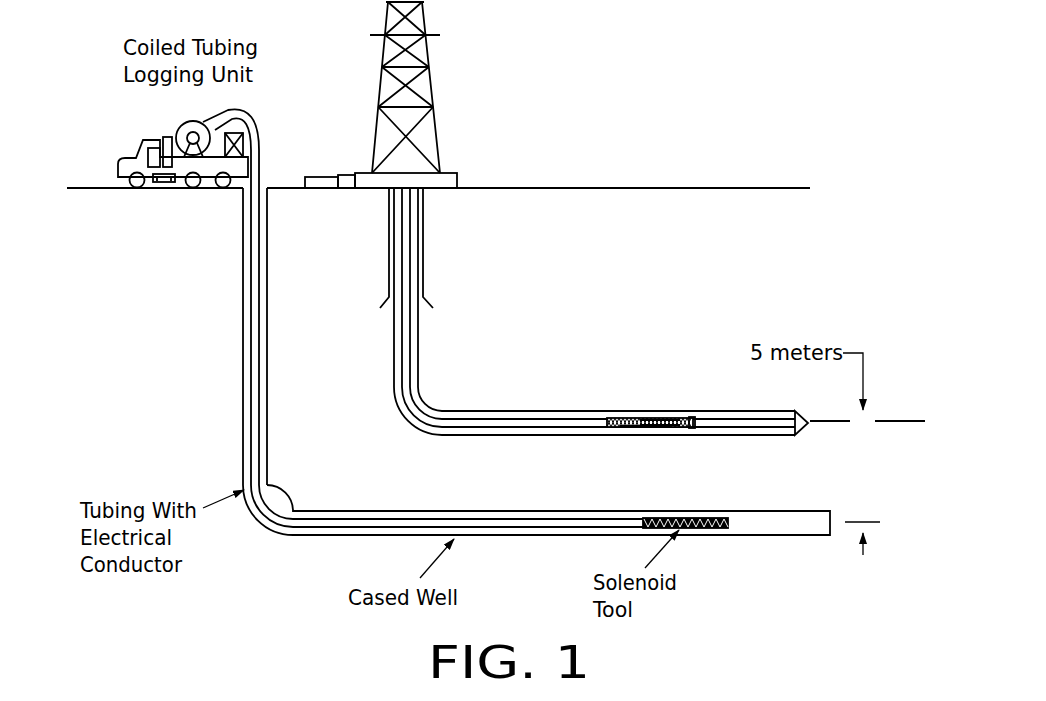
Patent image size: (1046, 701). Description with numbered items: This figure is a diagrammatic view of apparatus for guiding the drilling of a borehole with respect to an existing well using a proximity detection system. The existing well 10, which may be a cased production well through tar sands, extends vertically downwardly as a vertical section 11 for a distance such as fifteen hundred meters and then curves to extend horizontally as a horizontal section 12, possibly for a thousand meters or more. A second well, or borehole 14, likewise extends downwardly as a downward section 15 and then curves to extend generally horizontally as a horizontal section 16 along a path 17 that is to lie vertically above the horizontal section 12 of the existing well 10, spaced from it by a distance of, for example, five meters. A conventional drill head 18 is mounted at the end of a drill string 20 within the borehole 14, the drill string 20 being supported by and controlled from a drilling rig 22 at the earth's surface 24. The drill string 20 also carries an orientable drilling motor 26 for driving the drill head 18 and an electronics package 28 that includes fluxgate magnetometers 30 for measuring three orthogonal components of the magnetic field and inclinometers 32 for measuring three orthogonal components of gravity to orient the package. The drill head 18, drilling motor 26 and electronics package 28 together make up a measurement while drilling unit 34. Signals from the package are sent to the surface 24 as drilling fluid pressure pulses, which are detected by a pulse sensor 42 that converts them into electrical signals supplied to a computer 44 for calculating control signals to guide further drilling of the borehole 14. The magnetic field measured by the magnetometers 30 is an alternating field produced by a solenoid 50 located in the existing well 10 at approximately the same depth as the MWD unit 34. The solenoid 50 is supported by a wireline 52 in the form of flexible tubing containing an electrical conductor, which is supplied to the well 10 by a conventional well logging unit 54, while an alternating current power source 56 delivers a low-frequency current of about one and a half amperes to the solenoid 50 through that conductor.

The existing well 10 is at (536, 370).
The vertical section of existing well 11 is at (268, 343).
The horizontal section of existing well 12 is at (353, 511).
The borehole 14 is at (634, 337).
The downward section of borehole 15 is at (420, 343).
The horizontal section of borehole 16 is at (555, 410).
The path 17 is at (893, 420).
The drill head 18 is at (805, 425).
The drill string 20 is at (555, 428).
The drilling rig 22 is at (438, 123).
The earth's surface 24 is at (566, 186).
The drilling motor 26 is at (758, 418).
The electronics package 28 is at (665, 456).
The fluxgate magnetometers 30 is at (690, 413).
The inclinometers 32 is at (697, 413).
The measurement while drilling (MWD) unit 34 is at (683, 352).
The pulse sensor 42 is at (344, 175).
The computer 44 is at (314, 177).
The solenoid 50 is at (715, 528).
The wireline 52 is at (460, 521).
The well logging unit 54 is at (127, 142).
The alternating current power source 56 is at (213, 158).